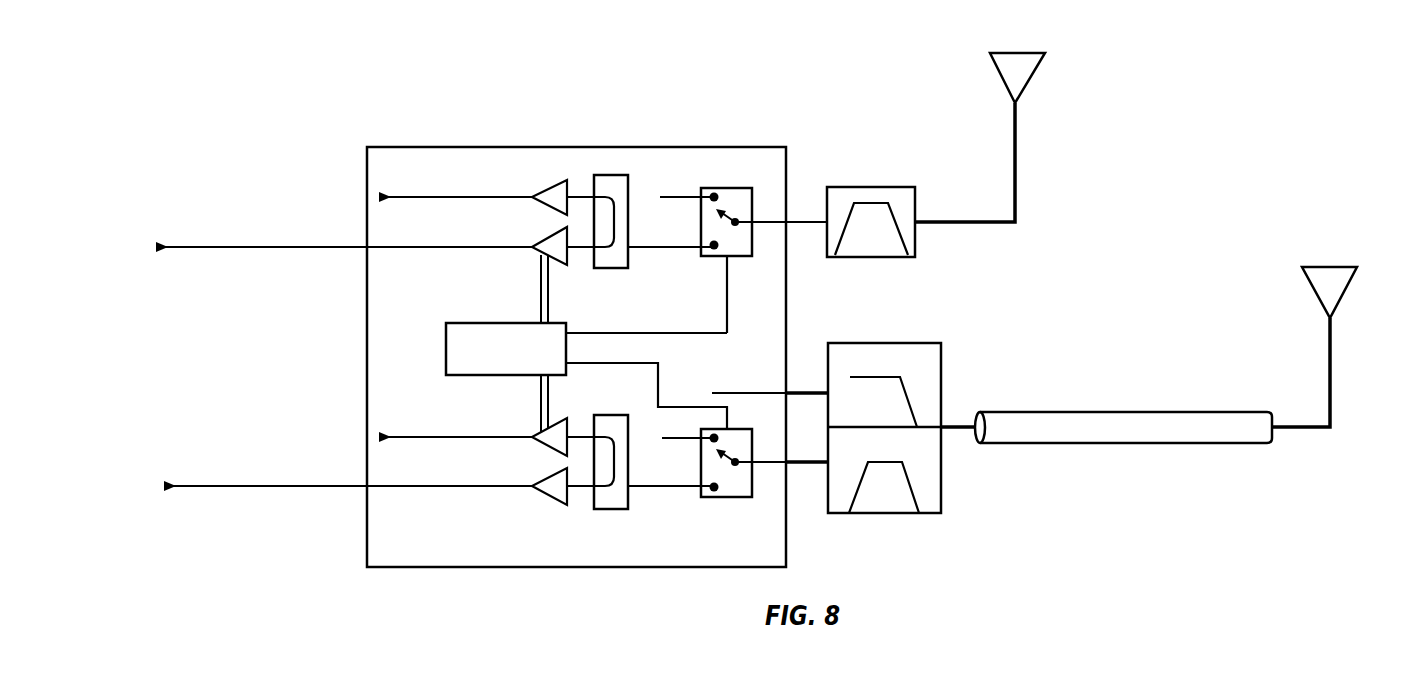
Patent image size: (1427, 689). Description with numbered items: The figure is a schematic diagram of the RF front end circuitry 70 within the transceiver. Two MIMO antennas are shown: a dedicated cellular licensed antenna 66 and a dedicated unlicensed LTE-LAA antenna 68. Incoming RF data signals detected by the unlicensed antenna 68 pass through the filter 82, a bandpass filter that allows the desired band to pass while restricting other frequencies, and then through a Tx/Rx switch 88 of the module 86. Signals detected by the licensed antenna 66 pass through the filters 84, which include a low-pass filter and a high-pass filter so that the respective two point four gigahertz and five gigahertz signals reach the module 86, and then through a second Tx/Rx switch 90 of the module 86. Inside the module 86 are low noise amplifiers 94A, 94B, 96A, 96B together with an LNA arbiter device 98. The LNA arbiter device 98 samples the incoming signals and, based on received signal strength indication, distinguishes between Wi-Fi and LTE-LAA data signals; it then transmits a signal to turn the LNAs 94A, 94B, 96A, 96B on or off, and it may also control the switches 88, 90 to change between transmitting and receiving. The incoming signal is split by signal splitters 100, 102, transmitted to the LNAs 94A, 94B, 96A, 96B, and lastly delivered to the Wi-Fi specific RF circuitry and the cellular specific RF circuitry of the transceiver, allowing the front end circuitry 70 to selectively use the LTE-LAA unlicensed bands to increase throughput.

The RF front end circuitry 70 is at (433, 52).
The module 86 is at (577, 147).
The low noise amplifier 94B is at (537, 184).
The low noise amplifier 94A is at (566, 266).
The low noise amplifier 96B is at (569, 415).
The low noise amplifier 96A is at (567, 507).
The signal splitter 100 is at (612, 268).
The signal splitter 102 is at (612, 510).
The switch 88 is at (728, 188).
The switch 90 is at (730, 498).
The LNA arbiter device 98 is at (446, 350).
The filter 82 is at (872, 187).
The filters 84 is at (885, 514).
The dedicated unlicensed antenna 68 is at (1001, 80).
The dedicated cellular licensed antenna 66 is at (1313, 292).